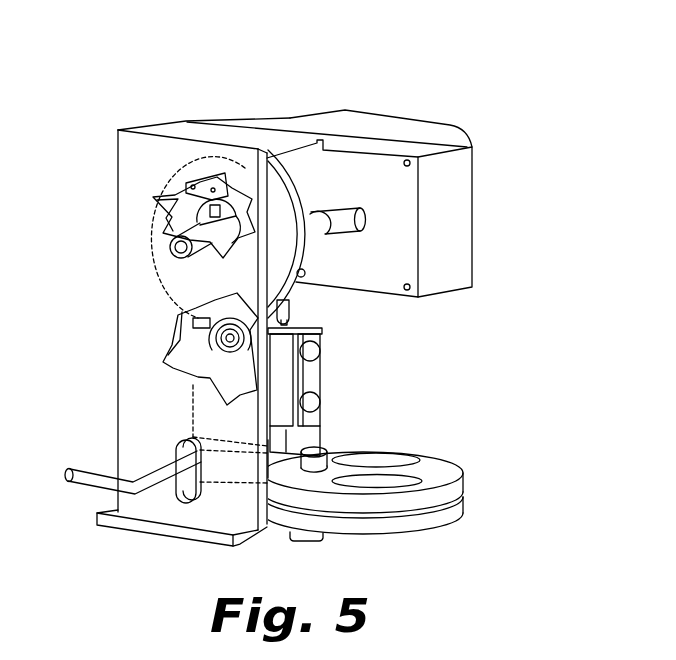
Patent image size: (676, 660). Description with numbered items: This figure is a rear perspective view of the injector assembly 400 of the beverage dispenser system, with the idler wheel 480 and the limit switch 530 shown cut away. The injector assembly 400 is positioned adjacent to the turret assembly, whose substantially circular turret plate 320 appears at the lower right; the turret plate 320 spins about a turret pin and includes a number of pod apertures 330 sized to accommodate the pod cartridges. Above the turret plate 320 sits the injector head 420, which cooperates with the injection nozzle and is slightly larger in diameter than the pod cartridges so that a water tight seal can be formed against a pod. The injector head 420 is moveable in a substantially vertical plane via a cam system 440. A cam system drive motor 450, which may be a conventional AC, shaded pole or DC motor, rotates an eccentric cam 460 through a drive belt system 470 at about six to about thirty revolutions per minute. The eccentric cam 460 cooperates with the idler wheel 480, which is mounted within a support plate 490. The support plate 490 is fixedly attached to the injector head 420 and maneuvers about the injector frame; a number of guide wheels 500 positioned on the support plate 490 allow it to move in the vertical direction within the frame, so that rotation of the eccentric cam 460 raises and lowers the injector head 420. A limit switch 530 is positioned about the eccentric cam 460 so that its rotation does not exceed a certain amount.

The injector assembly 400 is at (204, 88).
The turret plate 320 is at (464, 513).
The pod apertures 330 is at (415, 462).
The injector head 420 is at (318, 444).
The cam system 440 is at (165, 278).
The cam system drive motor 450 is at (452, 190).
The eccentric cam 460 is at (284, 188).
The drive belt system 470 is at (352, 208).
The idler wheel 480 is at (270, 330).
The support plate 490 is at (207, 354).
The guide wheels 500 is at (309, 348).
The limit switch 530 is at (180, 180).